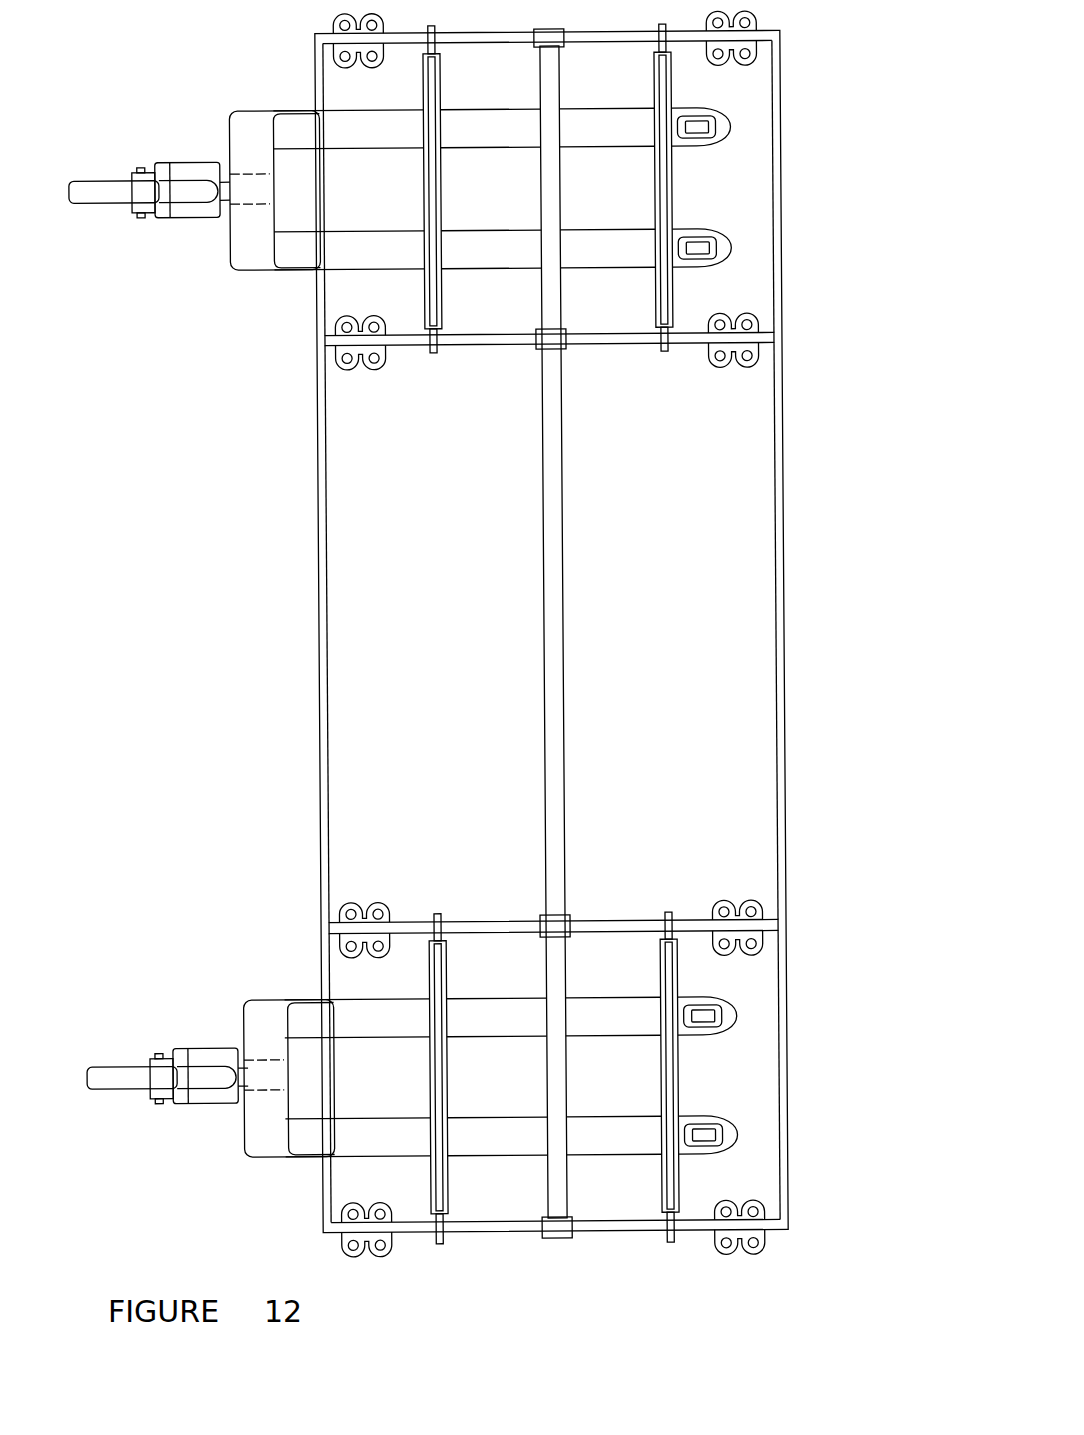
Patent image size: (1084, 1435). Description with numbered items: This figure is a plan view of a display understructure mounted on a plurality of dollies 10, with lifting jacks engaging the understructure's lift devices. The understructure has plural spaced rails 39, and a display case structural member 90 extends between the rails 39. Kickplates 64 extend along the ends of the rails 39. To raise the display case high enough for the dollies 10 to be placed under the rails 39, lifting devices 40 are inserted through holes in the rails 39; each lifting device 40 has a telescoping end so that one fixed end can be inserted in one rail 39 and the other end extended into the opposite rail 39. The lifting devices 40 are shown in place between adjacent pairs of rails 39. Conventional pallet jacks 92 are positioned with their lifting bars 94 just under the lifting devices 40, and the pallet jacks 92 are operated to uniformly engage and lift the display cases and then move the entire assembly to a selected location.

The dolly 10 is at (334, 17).
The rail 39 is at (476, 32).
The lift device 40 is at (452, 168).
The kickplate 64 is at (330, 592).
The display case structural member 90 is at (566, 577).
The pallet jack 92 is at (207, 230).
The lifting bar 94 is at (613, 138).